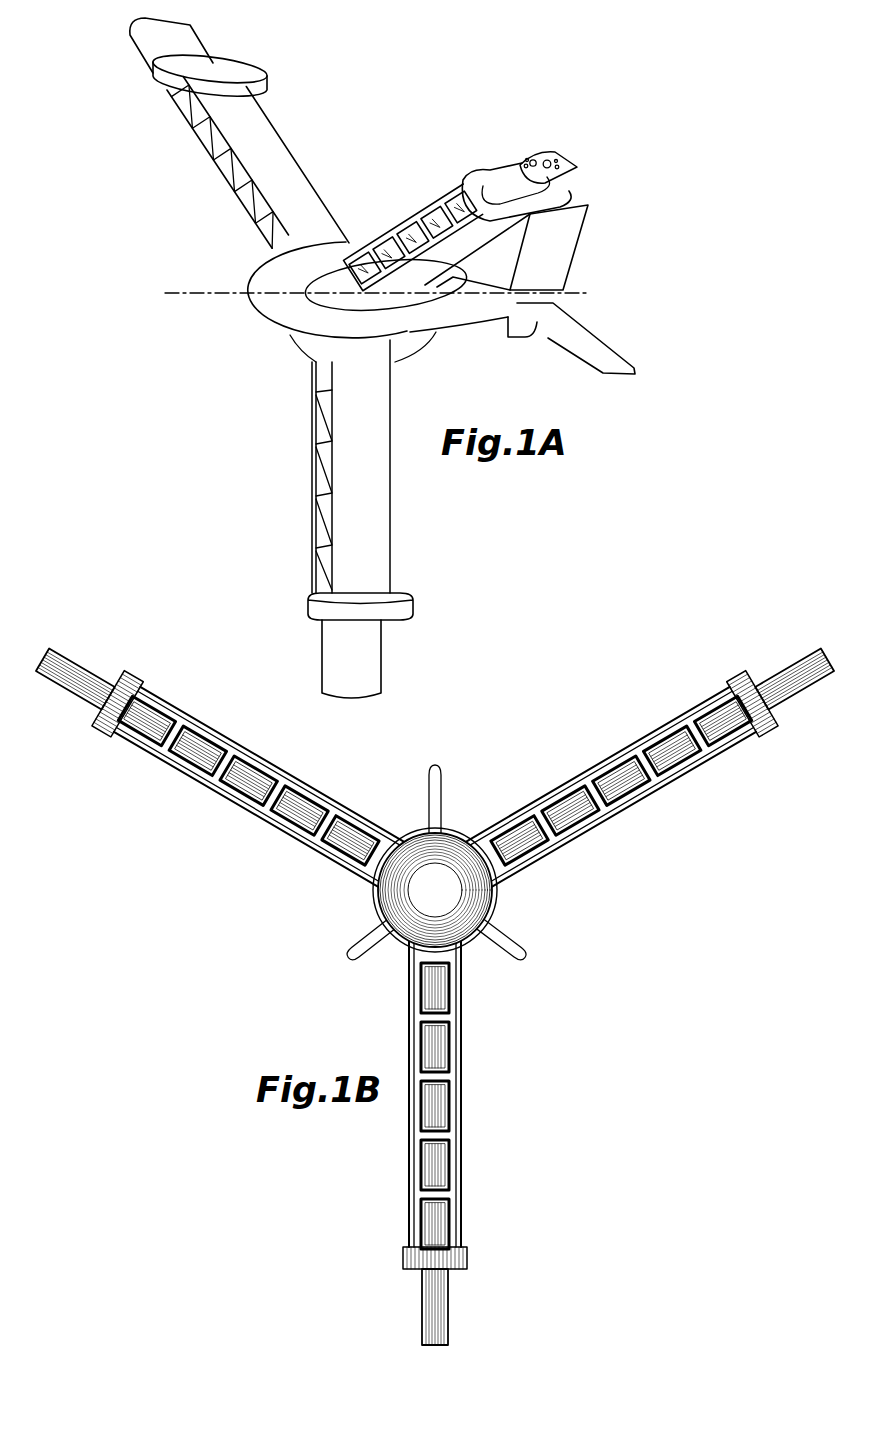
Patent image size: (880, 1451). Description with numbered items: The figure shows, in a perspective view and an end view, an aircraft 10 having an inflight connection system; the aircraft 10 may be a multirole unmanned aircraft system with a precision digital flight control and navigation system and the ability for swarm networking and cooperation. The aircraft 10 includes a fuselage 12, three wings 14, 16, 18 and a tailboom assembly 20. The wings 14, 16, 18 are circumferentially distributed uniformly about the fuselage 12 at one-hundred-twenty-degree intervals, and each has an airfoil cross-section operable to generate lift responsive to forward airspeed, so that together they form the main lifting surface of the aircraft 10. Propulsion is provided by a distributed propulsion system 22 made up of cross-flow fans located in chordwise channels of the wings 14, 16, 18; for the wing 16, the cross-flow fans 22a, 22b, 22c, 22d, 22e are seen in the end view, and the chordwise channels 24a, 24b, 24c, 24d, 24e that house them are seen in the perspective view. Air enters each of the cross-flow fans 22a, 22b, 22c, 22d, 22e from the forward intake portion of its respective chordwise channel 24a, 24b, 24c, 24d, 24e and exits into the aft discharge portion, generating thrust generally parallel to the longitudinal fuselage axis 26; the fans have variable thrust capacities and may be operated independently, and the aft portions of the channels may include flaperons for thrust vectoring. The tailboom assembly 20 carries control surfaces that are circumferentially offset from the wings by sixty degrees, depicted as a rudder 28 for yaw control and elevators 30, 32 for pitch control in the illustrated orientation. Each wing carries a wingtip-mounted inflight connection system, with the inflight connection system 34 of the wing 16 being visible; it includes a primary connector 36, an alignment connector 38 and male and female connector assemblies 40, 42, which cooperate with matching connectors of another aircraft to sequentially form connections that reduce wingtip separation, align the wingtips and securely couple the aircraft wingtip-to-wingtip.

In FIG. 1A, the aircraft 10 is at (200, 226).
In FIG. 1B, the aircraft 10 is at (472, 742).
In FIG. 1A, the fuselage 12 is at (268, 318).
In FIG. 1B, the fuselage 12 is at (395, 928).
In FIG. 1A, the wing 14 is at (272, 129).
In FIG. 1B, the wing 14 is at (153, 752).
In FIG. 1A, the wing 16 is at (478, 178).
In FIG. 1B, the wing 16 is at (717, 752).
In FIG. 1A, the wing 18 is at (385, 517).
In FIG. 1B, the wing 18 is at (457, 1143).
In FIG. 1A, the tailboom assembly 20 is at (452, 318).
In FIG. 1B, the distributed propulsion system 22 is at (630, 795).
In FIG. 1B, the cross-flow fan 22a is at (515, 830).
In FIG. 1B, the cross-flow fan 22b is at (563, 805).
In FIG. 1B, the cross-flow fan 22c is at (618, 777).
In FIG. 1B, the cross-flow fan 22d is at (668, 745).
In FIG. 1B, the cross-flow fan 22e is at (718, 718).
In FIG. 1A, the chordwise channel 24a is at (364, 256).
In FIG. 1A, the chordwise channel 24b is at (389, 243).
In FIG. 1A, the chordwise channel 24c is at (413, 228).
In FIG. 1A, the chordwise channel 24d is at (436, 213).
In FIG. 1A, the chordwise channel 24e is at (459, 198).
In FIG. 1A, the longitudinal fuselage axis 26 is at (200, 293).
In FIG. 1A, the rudder 28 is at (568, 243).
In FIG. 1B, the rudder 28 is at (428, 805).
In FIG. 1A, the elevator 30 is at (520, 337).
In FIG. 1B, the elevator 30 is at (337, 937).
In FIG. 1A, the elevator 32 is at (592, 335).
In FIG. 1B, the elevator 32 is at (533, 940).
In FIG. 1A, the inflight connection system 34 is at (576, 161).
In FIG. 1A, the primary connector 36 is at (532, 158).
In FIG. 1A, the alignment connector 38 is at (547, 158).
In FIG. 1A, the male connector assembly 40 is at (552, 183).
In FIG. 1A, the female connector assembly 42 is at (540, 208).